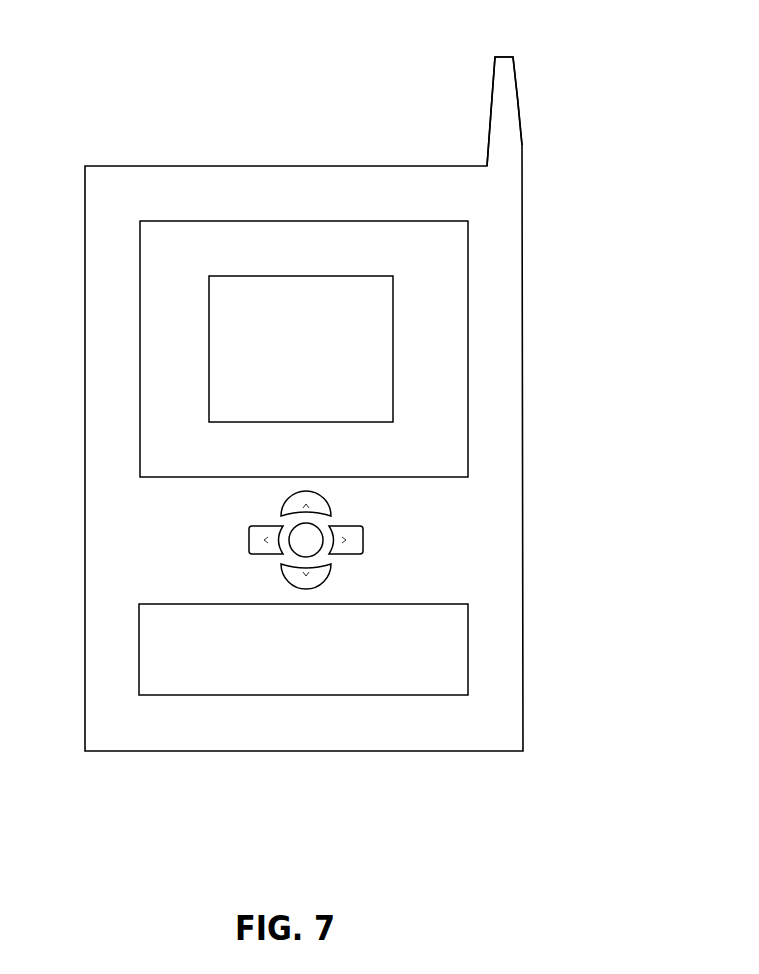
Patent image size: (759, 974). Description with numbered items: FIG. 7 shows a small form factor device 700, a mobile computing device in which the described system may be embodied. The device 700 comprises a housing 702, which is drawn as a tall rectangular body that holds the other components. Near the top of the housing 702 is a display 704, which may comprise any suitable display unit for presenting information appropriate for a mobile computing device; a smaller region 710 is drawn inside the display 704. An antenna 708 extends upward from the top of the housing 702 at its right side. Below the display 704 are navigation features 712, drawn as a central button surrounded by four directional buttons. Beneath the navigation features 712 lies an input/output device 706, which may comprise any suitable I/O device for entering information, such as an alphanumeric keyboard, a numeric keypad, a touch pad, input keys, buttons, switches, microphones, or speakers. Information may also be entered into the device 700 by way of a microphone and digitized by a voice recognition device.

The small form factor device 700 is at (100, 73).
The housing 702 is at (524, 458).
The display 704 is at (470, 240).
The input/output (I/O) device 706 is at (470, 640).
The antenna 708 is at (488, 103).
The display window 710 is at (394, 368).
The navigation features 712 is at (372, 532).